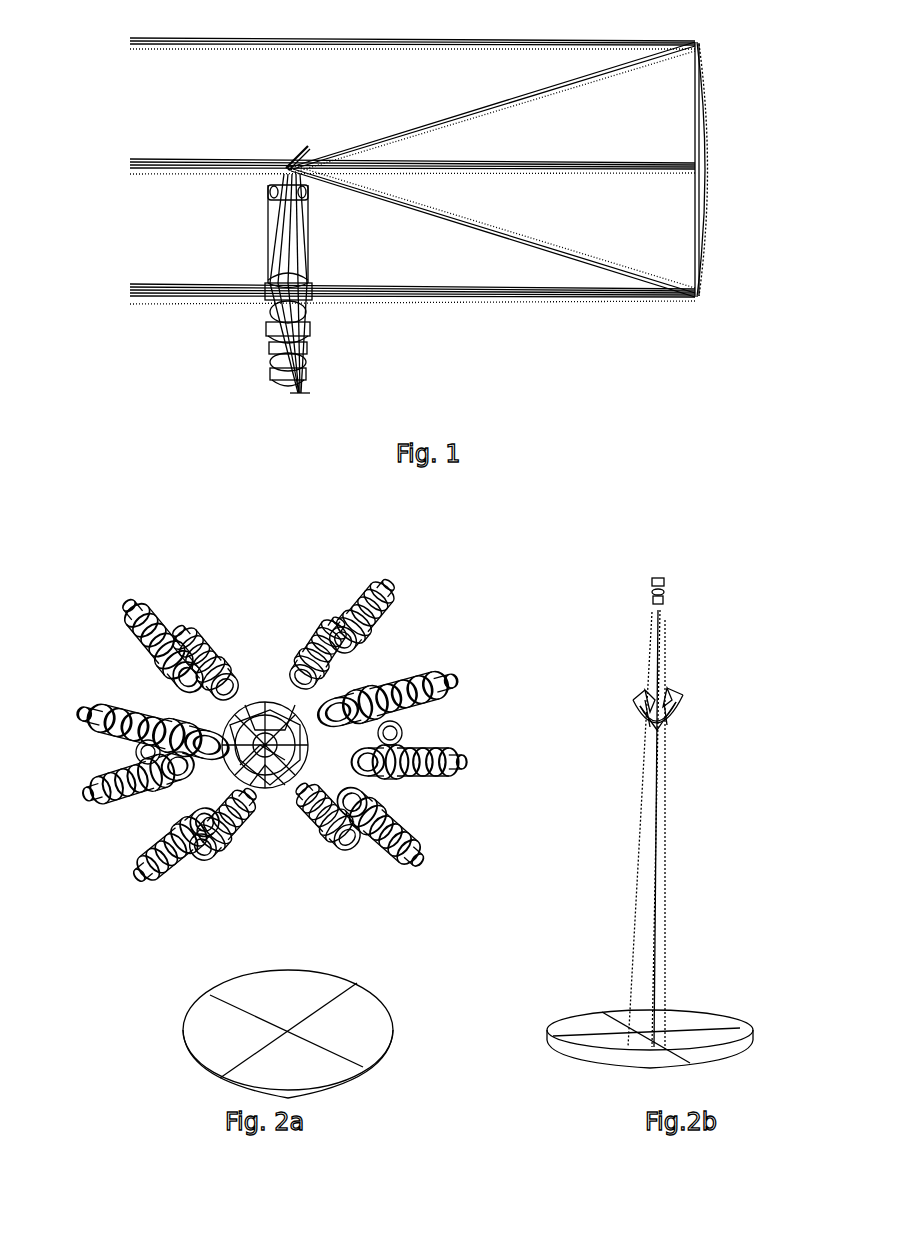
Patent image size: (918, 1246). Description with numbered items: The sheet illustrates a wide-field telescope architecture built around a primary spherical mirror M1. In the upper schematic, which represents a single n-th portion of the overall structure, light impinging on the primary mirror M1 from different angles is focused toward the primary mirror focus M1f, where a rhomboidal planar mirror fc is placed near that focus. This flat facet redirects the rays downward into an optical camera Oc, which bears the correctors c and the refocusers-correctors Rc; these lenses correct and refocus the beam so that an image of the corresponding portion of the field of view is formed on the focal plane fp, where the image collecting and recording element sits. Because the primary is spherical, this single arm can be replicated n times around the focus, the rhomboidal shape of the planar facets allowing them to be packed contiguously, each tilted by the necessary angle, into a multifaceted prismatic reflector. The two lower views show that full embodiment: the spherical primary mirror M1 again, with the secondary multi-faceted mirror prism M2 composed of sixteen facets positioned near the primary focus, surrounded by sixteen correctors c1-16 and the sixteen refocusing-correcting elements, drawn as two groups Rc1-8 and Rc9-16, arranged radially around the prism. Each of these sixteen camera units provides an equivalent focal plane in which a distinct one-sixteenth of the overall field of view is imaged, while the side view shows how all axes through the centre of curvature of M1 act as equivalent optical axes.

In FIG. 1, the primary spherical mirror M1 is at (716, 122).
In FIG. 2A, the primary spherical mirror M1 is at (288, 1034).
In FIG. 2B, the primary spherical mirror M1 is at (650, 1048).
In FIG. 1, the primary mirror focus M1f is at (318, 150).
In FIG. 1, the rhomboidal planar mirror fc is at (284, 161).
In FIG. 1, the correctors c is at (315, 201).
In FIG. 2B, the correctors c is at (658, 581).
In FIG. 1, the optical camera Oc is at (280, 283).
In FIG. 1, the refocusers-correctors Rc is at (313, 285).
In FIG. 1, the focal plane fp is at (300, 395).
In FIG. 2A, the secondary multi-faceted mirror prism M2 is at (268, 724).
In FIG. 2B, the secondary multi-faceted mirror prism M2 is at (640, 709).
In FIG. 2A, the refocusing-correcting elements Rc1-8 is at (388, 723).
In FIG. 2A, the refocusing-correcting elements Rc9-16 is at (147, 741).
In FIG. 2A, the correctors c1-16 is at (275, 786).